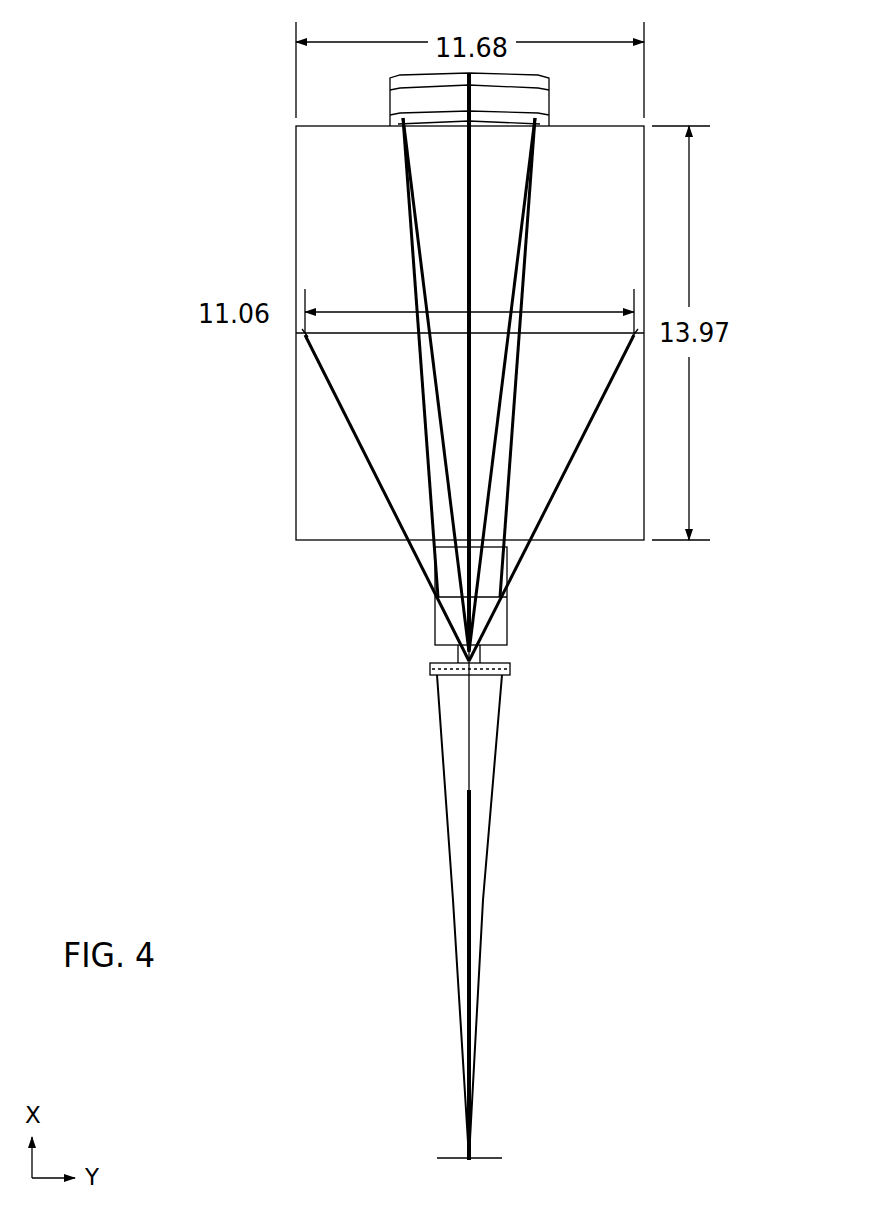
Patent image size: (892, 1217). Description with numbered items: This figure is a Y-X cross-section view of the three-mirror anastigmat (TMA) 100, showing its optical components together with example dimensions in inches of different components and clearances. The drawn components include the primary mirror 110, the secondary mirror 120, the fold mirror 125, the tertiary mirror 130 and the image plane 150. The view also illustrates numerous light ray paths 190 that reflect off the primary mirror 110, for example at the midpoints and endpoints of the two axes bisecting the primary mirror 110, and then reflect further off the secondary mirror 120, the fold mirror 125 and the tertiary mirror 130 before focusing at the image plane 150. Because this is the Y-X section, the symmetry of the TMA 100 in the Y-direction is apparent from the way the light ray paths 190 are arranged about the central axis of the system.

The three-mirror anastigmat (TMA) 100 is at (763, 906).
The primary mirror 110 is at (295, 253).
The secondary mirror 120 is at (434, 622).
The fold mirror 125 is at (481, 653).
The tertiary mirror 130 is at (390, 99).
The image plane 150 is at (490, 1157).
The light ray paths 190 is at (305, 343).